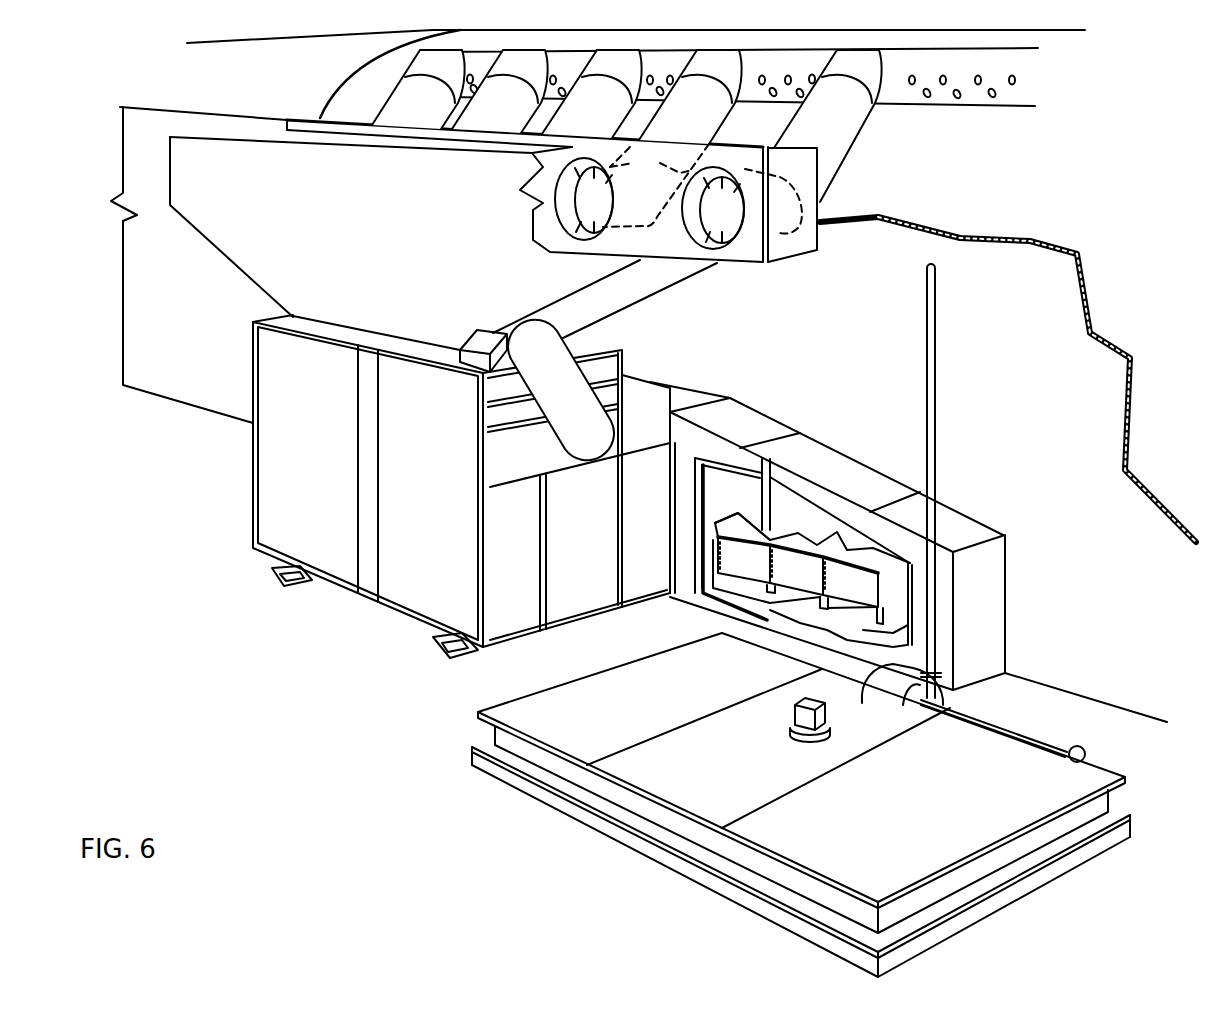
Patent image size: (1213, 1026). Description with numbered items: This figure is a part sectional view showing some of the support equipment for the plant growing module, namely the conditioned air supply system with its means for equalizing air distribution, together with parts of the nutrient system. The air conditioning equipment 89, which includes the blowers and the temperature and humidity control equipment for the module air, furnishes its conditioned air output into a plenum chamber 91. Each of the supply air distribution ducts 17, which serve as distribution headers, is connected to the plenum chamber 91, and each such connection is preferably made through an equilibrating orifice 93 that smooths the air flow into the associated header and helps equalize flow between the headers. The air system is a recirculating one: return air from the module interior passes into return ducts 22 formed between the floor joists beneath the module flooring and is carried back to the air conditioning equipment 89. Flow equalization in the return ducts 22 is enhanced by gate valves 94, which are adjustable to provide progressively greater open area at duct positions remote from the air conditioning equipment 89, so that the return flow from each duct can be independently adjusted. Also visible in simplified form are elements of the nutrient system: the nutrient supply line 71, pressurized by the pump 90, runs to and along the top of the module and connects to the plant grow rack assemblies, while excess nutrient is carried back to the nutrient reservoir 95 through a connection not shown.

The supply air distribution ducts 17 is at (973, 99).
The equilibrating orifice 93 is at (620, 157).
The plenum chamber 91 is at (628, 318).
The air conditioning equipment 89 is at (387, 615).
The nutrient supply line 71 is at (937, 363).
The gate valves 94 is at (822, 553).
The return ducts 22 is at (856, 606).
The pump 90 is at (890, 687).
The nutrient reservoir 95 is at (568, 815).